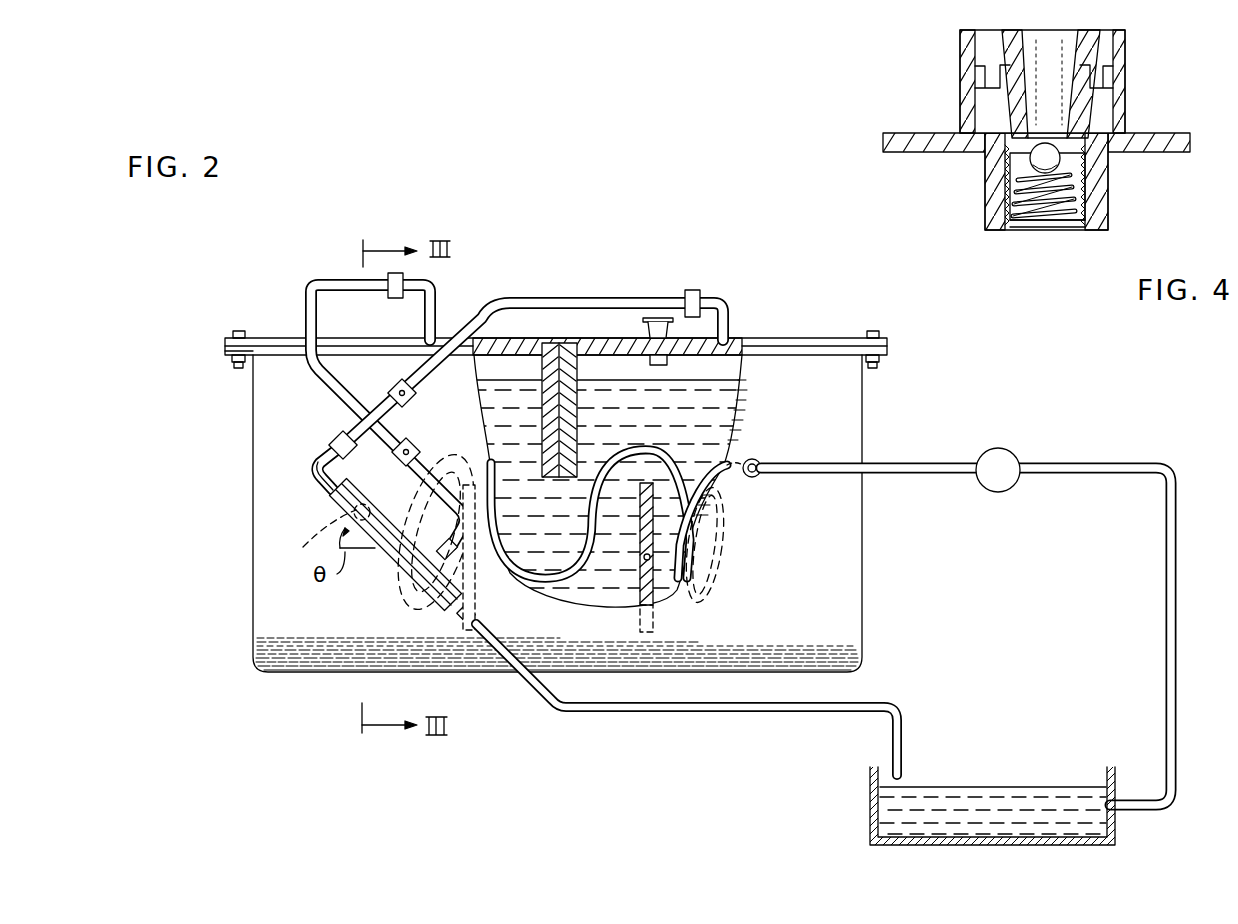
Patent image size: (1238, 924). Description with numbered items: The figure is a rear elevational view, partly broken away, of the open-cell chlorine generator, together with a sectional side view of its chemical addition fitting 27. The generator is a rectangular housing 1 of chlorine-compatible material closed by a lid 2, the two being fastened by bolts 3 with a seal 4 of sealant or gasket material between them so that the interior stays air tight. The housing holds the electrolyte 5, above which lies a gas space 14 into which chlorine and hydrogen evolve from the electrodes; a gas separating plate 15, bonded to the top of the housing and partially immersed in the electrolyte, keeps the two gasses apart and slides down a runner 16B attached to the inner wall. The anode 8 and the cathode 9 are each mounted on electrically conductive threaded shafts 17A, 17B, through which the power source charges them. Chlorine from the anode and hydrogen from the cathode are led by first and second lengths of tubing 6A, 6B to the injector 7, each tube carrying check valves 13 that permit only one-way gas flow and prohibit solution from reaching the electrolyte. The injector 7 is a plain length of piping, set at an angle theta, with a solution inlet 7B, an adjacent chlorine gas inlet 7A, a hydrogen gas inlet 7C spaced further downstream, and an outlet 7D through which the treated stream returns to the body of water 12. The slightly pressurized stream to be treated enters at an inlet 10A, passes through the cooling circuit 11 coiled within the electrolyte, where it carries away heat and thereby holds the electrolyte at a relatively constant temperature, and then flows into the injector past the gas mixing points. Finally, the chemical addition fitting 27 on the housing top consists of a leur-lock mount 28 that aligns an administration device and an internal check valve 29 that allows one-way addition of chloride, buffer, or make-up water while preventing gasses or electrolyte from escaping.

In FIG. 2, the housing 1 is at (251, 446).
In FIG. 2, the lid 2 is at (283, 338).
In FIG. 4, the lid 2 is at (895, 133).
In FIG. 2, the bolts 3 is at (238, 330).
In FIG. 2, the seal 4 is at (225, 347).
In FIG. 2, the electrolyte 5 is at (740, 425).
In FIG. 2, the first length of tubing 6A is at (583, 297).
In FIG. 2, the second length of tubing 6B is at (337, 280).
In FIG. 2, the injector 7 is at (373, 553).
In FIG. 2, the chlorine gas inlet 7A is at (330, 492).
In FIG. 2, the solution inlet 7B is at (318, 547).
In FIG. 2, the hydrogen gas inlet 7C is at (457, 568).
In FIG. 2, the outlet 7D is at (476, 613).
In FIG. 2, the anode 8 is at (640, 570).
In FIG. 2, the cathode 9 is at (460, 631).
In FIG. 2, the inlet 10A is at (758, 462).
In FIG. 2, the cooling circuit 11 is at (712, 498).
In FIG. 2, the body of water 12 is at (993, 784).
In FIG. 2, the check valves 13 is at (410, 400).
In FIG. 2, the gas space 14 is at (713, 368).
In FIG. 2, the gas separating plate 15 is at (557, 345).
In FIG. 2, the runner 16B is at (578, 372).
In FIG. 2, the threaded shaft 17A is at (466, 540).
In FIG. 2, the threaded shaft 17B is at (656, 567).
In FIG. 2, the chemical addition fitting 27 is at (655, 315).
In FIG. 4, the chemical addition fitting 27 is at (958, 166).
In FIG. 4, the leur-lock mount 28 is at (1120, 110).
In FIG. 4, the internal check valve 29 is at (1055, 157).